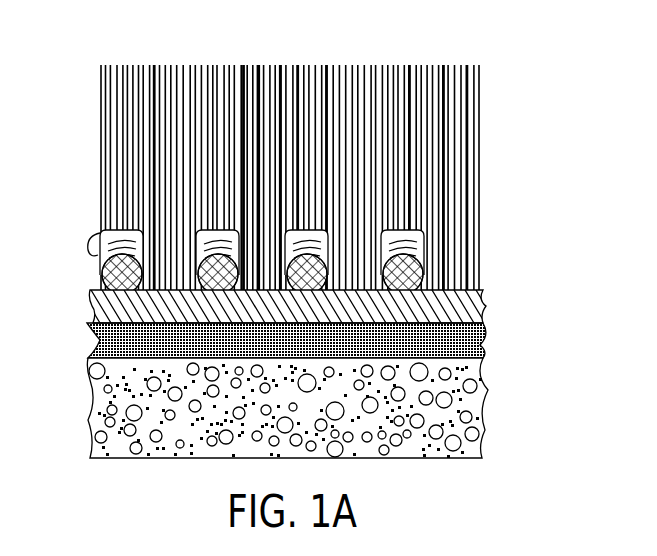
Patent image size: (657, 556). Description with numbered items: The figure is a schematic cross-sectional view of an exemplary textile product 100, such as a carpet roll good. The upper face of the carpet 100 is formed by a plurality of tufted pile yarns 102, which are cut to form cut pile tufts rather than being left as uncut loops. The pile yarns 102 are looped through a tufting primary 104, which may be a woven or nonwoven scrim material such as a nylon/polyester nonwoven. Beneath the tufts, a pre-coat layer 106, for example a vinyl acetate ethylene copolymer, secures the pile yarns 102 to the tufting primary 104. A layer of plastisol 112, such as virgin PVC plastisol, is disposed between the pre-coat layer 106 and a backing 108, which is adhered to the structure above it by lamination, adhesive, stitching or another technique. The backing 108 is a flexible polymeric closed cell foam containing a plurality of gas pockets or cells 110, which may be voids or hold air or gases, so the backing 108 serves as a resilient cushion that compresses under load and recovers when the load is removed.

The textile product 100 is at (582, 91).
The tufted pile yarns 102 is at (480, 200).
The tufting primary 104 is at (103, 281).
The pre-coat layer 106 is at (484, 297).
The backing 108 is at (487, 388).
The cells 110 is at (92, 371).
The layer of plastisol 112 is at (485, 345).